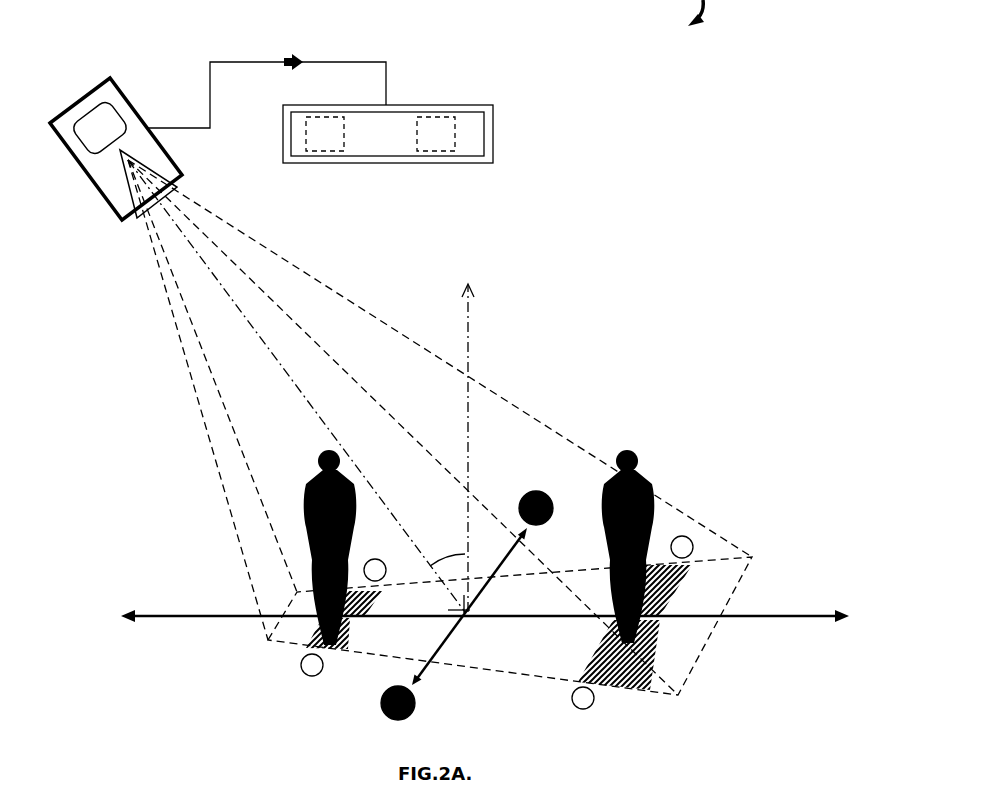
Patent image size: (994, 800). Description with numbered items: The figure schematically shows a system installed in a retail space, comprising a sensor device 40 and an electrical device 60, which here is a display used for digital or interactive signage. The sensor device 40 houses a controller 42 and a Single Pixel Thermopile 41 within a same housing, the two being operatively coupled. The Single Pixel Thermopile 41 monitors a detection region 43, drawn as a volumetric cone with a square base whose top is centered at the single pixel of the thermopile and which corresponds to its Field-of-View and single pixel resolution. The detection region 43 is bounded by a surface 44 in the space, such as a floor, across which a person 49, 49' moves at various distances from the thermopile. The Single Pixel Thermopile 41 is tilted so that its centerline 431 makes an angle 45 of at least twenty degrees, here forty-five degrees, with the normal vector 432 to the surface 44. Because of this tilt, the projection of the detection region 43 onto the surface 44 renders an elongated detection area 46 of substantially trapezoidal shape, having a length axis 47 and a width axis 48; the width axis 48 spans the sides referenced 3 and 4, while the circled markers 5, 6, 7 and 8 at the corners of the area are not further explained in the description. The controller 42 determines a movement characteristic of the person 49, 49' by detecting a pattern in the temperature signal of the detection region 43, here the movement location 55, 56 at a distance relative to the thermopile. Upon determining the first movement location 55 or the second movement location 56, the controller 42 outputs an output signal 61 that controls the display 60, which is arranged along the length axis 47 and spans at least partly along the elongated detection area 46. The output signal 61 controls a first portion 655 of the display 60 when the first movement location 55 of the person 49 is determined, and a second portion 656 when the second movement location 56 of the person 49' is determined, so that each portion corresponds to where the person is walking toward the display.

The sensor device 40 is at (127, 84).
The Single Pixel Thermopile 41 is at (138, 224).
The controller 42 is at (86, 126).
The detection region 43 is at (199, 389).
The surface 44 is at (521, 602).
The angle 45 is at (439, 548).
The elongated detection area 46 is at (709, 661).
The length axis 47 is at (780, 614).
The width axis 48 is at (513, 531).
The person 49 is at (360, 547).
The person 49' is at (659, 544).
The first movement location 55 is at (352, 632).
The second movement location 56 is at (666, 600).
The electrical device 60 is at (426, 83).
The output signal 61 is at (299, 63).
The centerline 431 is at (316, 406).
The normal vector 432 is at (468, 355).
The first portion of the display 655 is at (333, 142).
The second portion of the display 656 is at (440, 142).
The side of the elongated detection area 3 is at (398, 703).
The side of the elongated detection area 4 is at (536, 508).
The corner point 5 is at (312, 665).
The corner point 6 is at (375, 570).
The corner point 7 is at (583, 698).
The corner point 8 is at (682, 547).